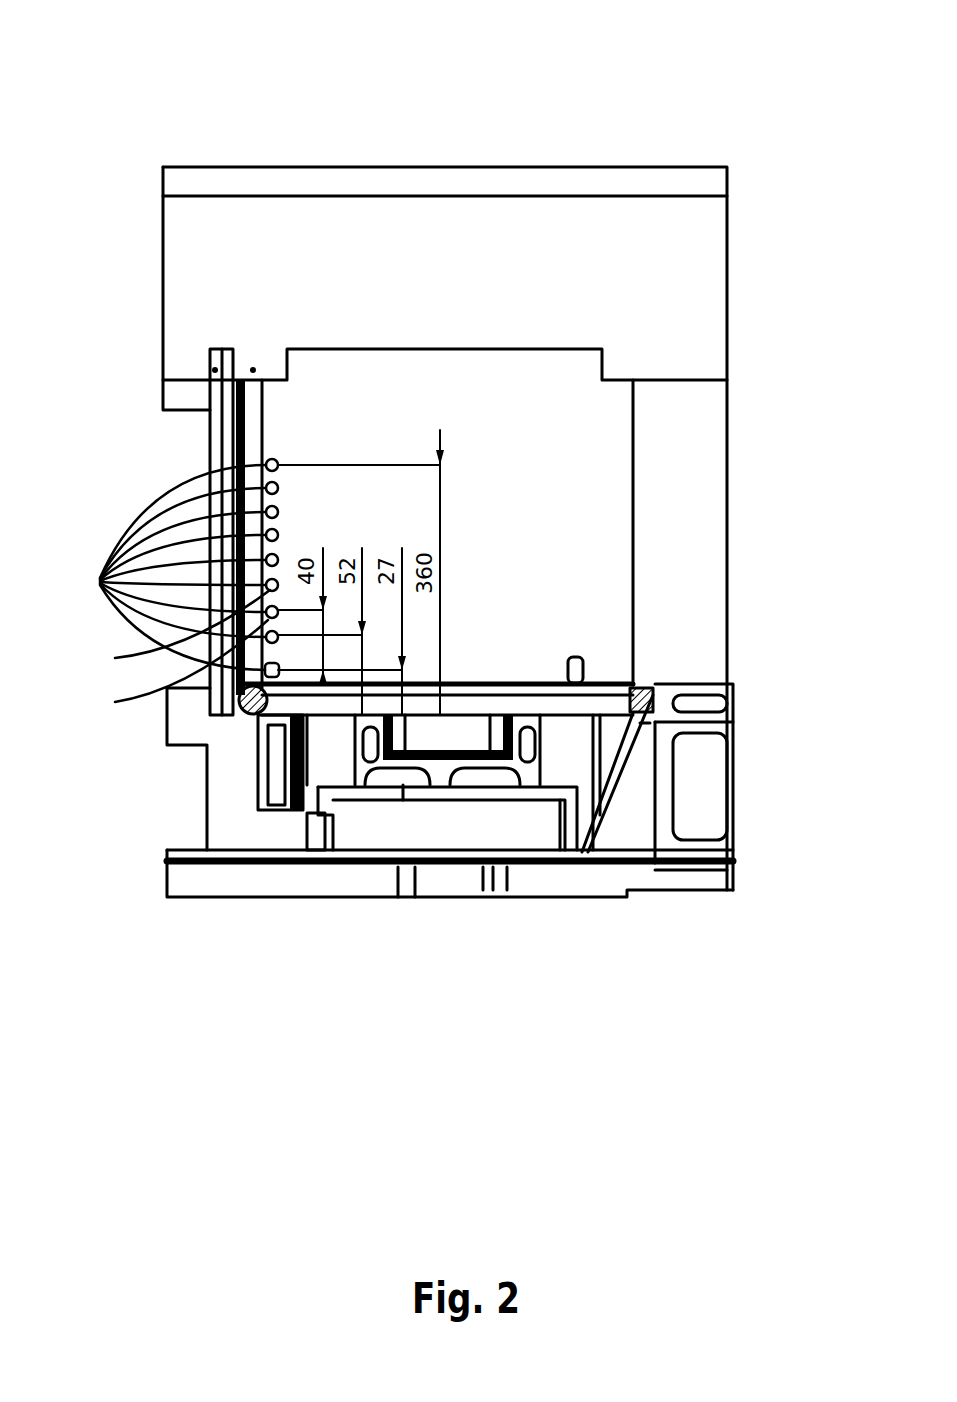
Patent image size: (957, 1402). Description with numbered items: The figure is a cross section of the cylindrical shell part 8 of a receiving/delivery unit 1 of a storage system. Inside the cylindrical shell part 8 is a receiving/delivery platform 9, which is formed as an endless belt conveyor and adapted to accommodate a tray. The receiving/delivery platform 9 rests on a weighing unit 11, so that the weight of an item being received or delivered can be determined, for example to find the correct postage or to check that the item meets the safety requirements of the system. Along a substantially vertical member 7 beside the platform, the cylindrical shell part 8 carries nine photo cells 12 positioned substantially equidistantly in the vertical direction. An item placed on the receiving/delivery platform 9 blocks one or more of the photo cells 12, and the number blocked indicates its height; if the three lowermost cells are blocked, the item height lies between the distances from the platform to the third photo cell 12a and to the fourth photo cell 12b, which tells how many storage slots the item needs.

The receiving/delivery unit 1 is at (549, 110).
The vertical post / holder 7 is at (213, 448).
The cylindrical shell part 8 is at (697, 323).
The receiving/delivery platform 9 is at (600, 683).
The weighing unit 11 is at (455, 738).
The photo cells 12 is at (165, 568).
The third photo cell 12a is at (160, 671).
The fourth photo cell 12b is at (161, 639).